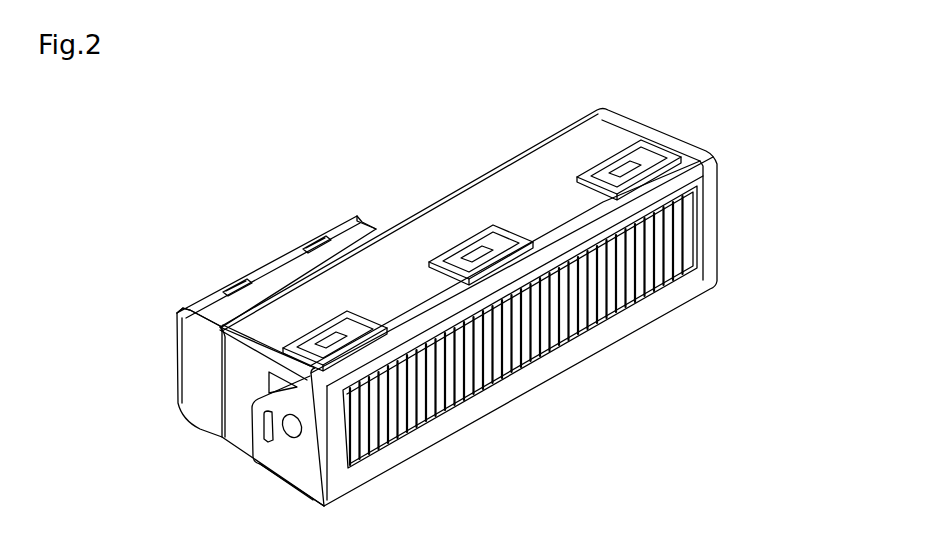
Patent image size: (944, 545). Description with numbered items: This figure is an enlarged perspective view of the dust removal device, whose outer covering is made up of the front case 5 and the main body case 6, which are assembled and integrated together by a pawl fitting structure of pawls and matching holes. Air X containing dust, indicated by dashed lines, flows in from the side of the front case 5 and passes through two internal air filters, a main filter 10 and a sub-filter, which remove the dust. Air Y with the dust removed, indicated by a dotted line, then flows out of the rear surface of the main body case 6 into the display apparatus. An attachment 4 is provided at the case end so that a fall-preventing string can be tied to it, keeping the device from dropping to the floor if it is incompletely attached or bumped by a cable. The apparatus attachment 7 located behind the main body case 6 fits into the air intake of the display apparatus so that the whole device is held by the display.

The attachment 4 is at (251, 428).
The front case 5 is at (713, 153).
The main body case 6 is at (628, 110).
The apparatus attachment 7 is at (317, 237).
The main filter 10 is at (688, 222).
The air X is at (397, 405).
The air Y is at (160, 252).